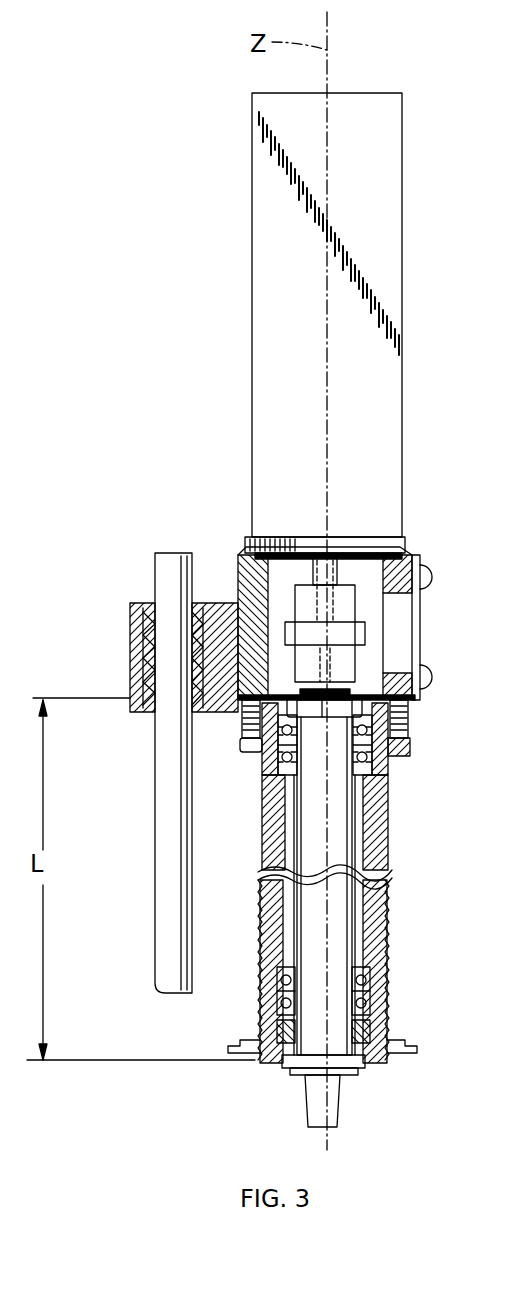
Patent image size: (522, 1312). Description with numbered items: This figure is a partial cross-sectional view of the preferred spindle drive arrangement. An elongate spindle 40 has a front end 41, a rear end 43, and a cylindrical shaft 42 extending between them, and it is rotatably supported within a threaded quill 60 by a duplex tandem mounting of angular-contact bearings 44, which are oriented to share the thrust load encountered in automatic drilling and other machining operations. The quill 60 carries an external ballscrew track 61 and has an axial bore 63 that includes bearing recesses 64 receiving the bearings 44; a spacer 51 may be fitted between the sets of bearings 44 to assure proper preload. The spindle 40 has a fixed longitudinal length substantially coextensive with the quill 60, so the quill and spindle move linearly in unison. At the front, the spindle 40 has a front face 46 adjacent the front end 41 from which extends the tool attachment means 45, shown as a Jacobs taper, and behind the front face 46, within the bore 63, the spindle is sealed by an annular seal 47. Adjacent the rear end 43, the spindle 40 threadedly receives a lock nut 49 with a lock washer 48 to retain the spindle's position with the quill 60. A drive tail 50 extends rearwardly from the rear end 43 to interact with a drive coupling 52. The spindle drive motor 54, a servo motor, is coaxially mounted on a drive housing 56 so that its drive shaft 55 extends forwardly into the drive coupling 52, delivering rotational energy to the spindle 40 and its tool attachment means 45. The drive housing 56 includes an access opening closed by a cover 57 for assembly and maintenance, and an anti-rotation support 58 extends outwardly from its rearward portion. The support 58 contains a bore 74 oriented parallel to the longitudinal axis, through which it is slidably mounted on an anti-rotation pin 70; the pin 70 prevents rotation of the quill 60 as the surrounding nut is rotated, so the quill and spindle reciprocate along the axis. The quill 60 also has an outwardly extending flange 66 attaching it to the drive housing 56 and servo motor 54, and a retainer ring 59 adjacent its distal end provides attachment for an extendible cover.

The spindle 40 is at (363, 822).
The front end 41 is at (285, 1068).
The cylindrical shaft 42 is at (340, 809).
The rear end 43 is at (358, 672).
The angular-contact bearings 44 is at (268, 752).
The tool attachment means 45 is at (340, 1116).
The front face 46 is at (350, 1076).
The annular seal 47 is at (372, 1035).
The lock washer 48 is at (440, 752).
The lock nut 49 is at (422, 676).
The drive tail 50 is at (333, 684).
The spacer 51 is at (290, 820).
The drive coupling 52 is at (372, 620).
The spindle drive motor 54 is at (303, 266).
The drive shaft 55 is at (318, 552).
The drive housing 56 is at (240, 565).
The cover 57 is at (418, 630).
The anti-rotation support 58 is at (130, 613).
The retainer ring 59 is at (400, 1050).
The threaded quill 60 is at (388, 944).
The external ballscrew track 61 is at (389, 922).
The bore 63 is at (390, 872).
The bearing recesses 64 is at (396, 760).
The flange 66 is at (243, 722).
The anti-rotation pin 70 is at (165, 805).
The bore 74 is at (148, 657).